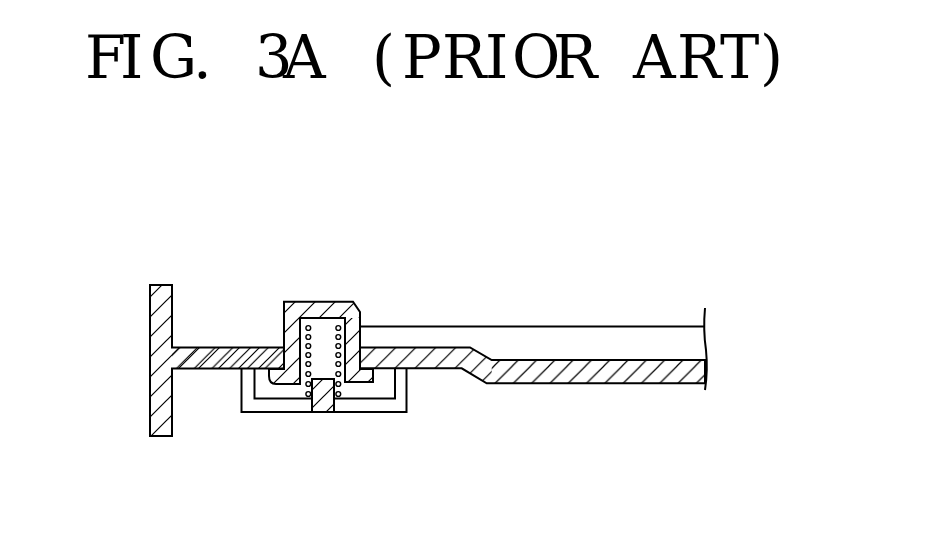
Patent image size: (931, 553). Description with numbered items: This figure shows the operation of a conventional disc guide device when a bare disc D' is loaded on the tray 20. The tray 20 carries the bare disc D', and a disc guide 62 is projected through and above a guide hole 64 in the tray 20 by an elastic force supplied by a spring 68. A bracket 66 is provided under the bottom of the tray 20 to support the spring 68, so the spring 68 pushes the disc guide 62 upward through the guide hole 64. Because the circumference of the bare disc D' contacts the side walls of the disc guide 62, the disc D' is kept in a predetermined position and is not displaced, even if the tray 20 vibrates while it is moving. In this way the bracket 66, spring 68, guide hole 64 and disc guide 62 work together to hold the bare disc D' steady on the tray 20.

The tray 20 is at (437, 368).
The bare disc D' is at (533, 315).
The disc guide 62 is at (362, 312).
The guide hole 64 is at (283, 362).
The bracket 66 is at (268, 408).
The spring 68 is at (338, 403).